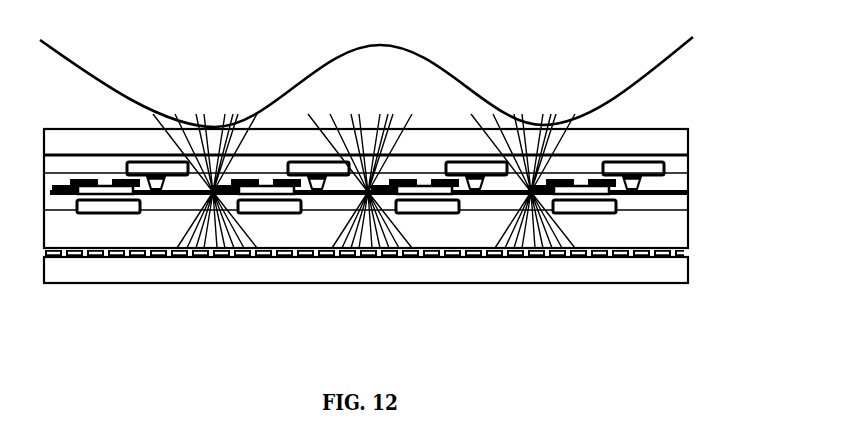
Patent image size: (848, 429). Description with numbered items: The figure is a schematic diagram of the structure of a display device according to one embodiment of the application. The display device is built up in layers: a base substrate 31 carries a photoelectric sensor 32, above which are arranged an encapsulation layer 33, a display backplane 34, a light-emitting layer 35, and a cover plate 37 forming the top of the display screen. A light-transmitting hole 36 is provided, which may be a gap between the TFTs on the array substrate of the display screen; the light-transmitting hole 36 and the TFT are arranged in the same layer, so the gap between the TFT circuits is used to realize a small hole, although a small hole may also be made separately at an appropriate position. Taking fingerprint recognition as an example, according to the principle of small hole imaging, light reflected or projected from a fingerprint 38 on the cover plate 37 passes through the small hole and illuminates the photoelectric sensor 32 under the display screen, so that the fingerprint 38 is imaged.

The base substrate 31 is at (525, 265).
The photoelectric sensor 32 is at (588, 253).
The encapsulation layer 33 is at (665, 228).
The display backplane 34 is at (662, 182).
The light-emitting layer 35 is at (677, 164).
The light-transmitting hole 36 is at (533, 190).
The cover plate 37 is at (613, 138).
The fingerprint 38 is at (627, 90).